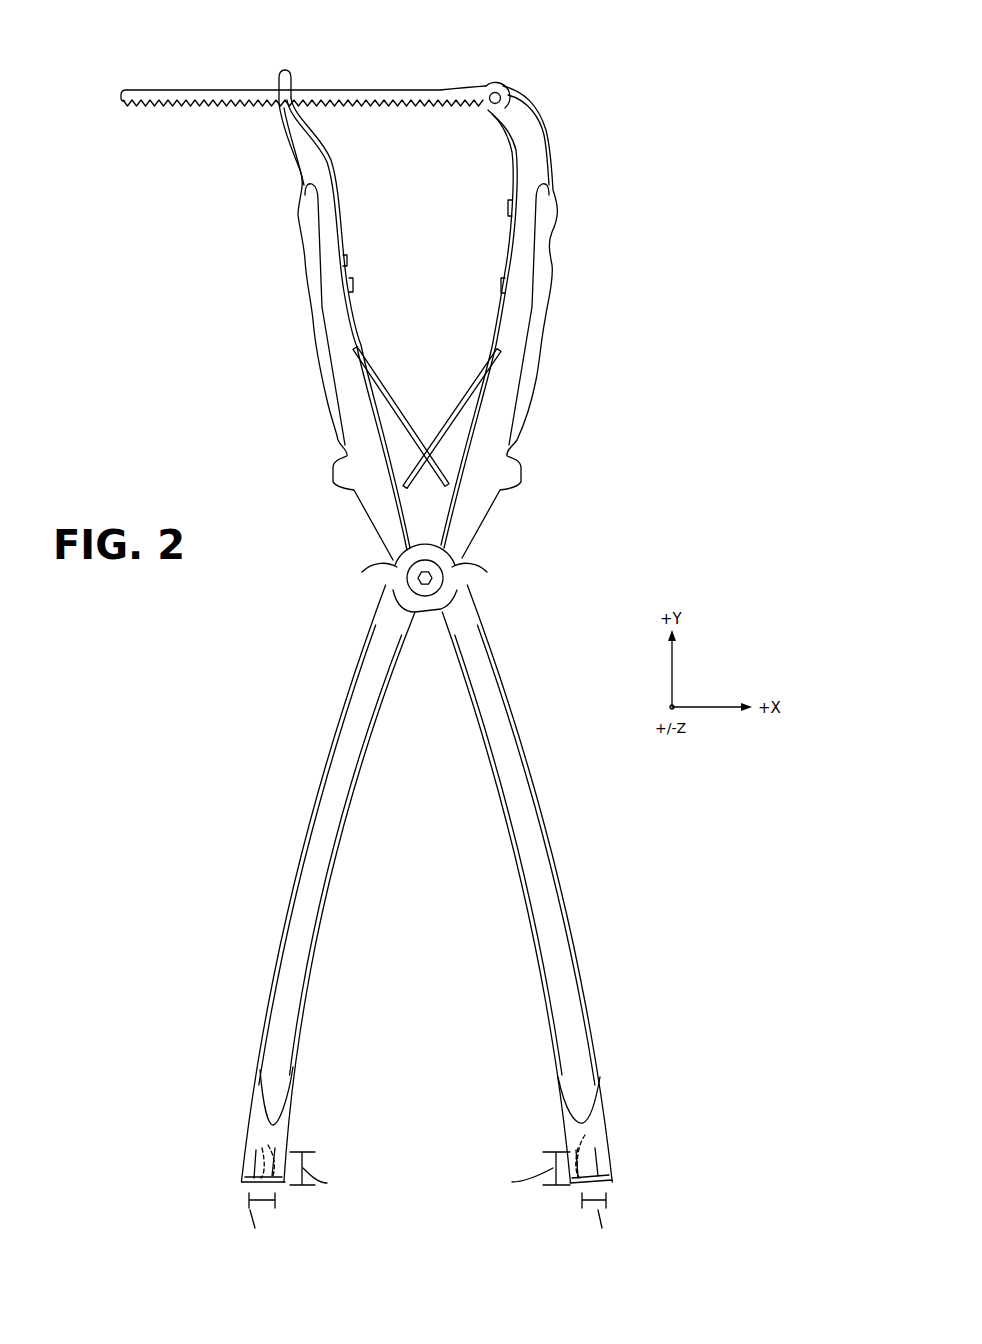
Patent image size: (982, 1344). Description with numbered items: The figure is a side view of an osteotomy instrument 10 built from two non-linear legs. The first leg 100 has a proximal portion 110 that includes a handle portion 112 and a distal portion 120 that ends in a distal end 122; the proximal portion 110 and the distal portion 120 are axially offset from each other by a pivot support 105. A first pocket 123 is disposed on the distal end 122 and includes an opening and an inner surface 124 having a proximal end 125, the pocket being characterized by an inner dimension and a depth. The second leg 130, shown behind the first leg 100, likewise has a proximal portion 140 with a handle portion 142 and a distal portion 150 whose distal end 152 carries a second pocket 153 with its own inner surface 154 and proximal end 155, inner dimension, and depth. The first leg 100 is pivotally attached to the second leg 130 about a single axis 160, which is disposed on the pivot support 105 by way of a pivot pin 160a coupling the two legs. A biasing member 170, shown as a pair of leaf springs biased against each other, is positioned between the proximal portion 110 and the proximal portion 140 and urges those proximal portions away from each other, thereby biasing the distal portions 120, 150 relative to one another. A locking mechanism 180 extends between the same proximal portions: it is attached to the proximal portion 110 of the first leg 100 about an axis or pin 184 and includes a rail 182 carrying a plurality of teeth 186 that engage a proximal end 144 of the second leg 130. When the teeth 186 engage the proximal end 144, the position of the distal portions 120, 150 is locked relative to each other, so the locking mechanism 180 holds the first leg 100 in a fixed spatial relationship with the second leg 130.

The osteotomy instrument 10 is at (656, 143).
The first leg 100 is at (572, 364).
The pivot support 105 is at (408, 572).
The proximal portion 110 is at (553, 280).
The handle portion 112 is at (554, 243).
The distal portion 120 is at (290, 875).
The distal end 122 is at (250, 1185).
The first pocket 123 is at (264, 1170).
The inner surface 124 is at (243, 1155).
The proximal end 125 is at (268, 1145).
The second leg 130 is at (226, 355).
The proximal portion 140 is at (306, 284).
The handle portion 142 is at (314, 370).
The proximal end 144 is at (281, 104).
The distal portion 150 is at (565, 872).
The distal end 152 is at (606, 1184).
The second pocket 153 is at (588, 1172).
The inner surface 154 is at (614, 1165).
The proximal end 155 is at (585, 1135).
The single axis 160 is at (444, 571).
The pivot pin 160a is at (442, 607).
The biasing member 170 is at (428, 408).
The locking mechanism 180 is at (400, 80).
The rail 182 is at (340, 90).
The axis or pin 184 is at (498, 95).
The plurality of teeth 186 is at (400, 106).